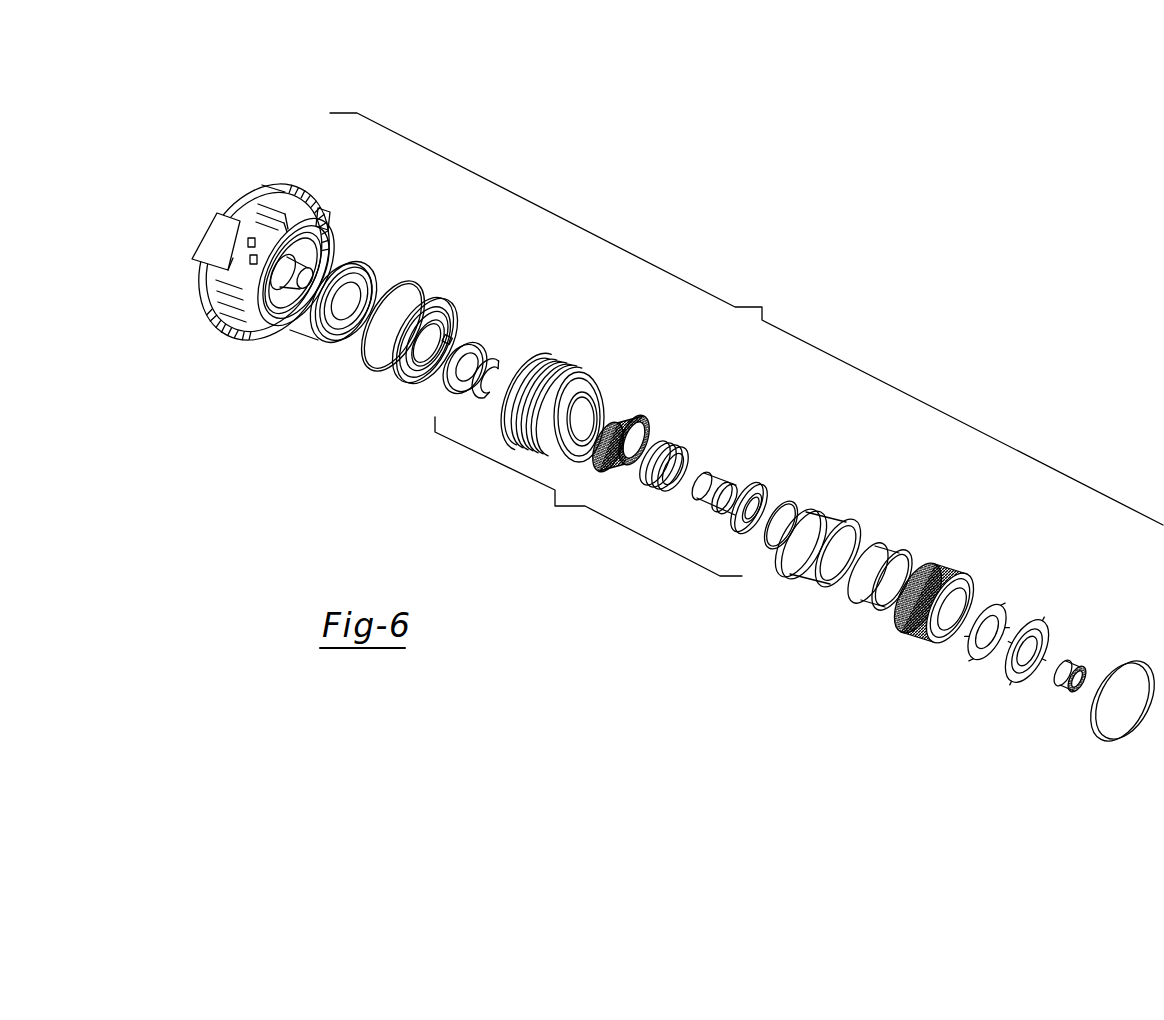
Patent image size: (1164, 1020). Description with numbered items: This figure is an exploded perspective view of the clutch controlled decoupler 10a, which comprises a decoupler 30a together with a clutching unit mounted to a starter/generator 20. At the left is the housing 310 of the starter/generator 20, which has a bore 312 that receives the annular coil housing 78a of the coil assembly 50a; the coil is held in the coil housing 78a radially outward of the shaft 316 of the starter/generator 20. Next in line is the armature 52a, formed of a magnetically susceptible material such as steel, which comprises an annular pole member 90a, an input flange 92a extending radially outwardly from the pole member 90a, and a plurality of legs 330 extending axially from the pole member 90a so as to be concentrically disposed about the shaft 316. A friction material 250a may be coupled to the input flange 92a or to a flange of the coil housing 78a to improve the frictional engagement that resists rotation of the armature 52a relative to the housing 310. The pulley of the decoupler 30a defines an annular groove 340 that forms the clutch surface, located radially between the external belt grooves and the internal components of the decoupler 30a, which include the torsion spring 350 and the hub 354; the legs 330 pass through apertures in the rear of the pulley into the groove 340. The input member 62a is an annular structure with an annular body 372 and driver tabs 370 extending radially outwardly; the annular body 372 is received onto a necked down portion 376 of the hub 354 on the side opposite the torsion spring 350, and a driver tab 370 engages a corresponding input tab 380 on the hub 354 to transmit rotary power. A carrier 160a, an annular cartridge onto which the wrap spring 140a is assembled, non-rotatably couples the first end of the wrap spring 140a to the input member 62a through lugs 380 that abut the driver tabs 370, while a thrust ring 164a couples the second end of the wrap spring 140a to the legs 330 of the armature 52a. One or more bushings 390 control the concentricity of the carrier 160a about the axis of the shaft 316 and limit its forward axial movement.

The clutch controlled decoupler 10a is at (746, 319).
The decoupler 30a is at (588, 496).
The starter/generator 20 is at (232, 218).
The housing 310 is at (262, 185).
The bore 312 is at (290, 330).
The shaft 316 is at (320, 258).
The annular groove 340 is at (340, 340).
The coil housing 78a is at (335, 275).
The coil assembly 50a is at (375, 262).
The friction material 250a is at (410, 278).
The armature 52a is at (445, 294).
The legs 330 is at (428, 316).
The input flange 92a is at (397, 372).
The pole member 90a is at (407, 385).
The torsion spring 350 is at (675, 440).
The hub 354 is at (736, 468).
The input tab 380 is at (760, 497).
The necked down portion 376 is at (767, 488).
The thrust ring 164a is at (804, 588).
The wrap spring 140a is at (933, 567).
The carrier 160a is at (950, 643).
The bushings 390 is at (980, 675).
The input member 62a is at (1023, 615).
The driver tabs 370 is at (1047, 628).
The annular body 372 is at (1030, 677).